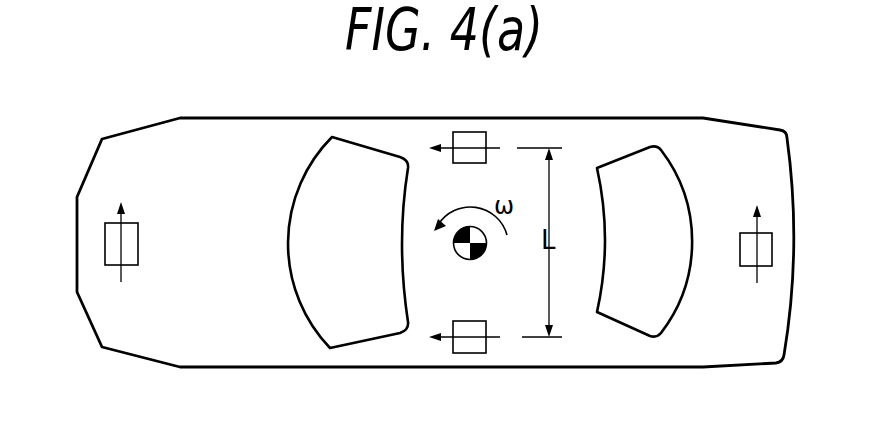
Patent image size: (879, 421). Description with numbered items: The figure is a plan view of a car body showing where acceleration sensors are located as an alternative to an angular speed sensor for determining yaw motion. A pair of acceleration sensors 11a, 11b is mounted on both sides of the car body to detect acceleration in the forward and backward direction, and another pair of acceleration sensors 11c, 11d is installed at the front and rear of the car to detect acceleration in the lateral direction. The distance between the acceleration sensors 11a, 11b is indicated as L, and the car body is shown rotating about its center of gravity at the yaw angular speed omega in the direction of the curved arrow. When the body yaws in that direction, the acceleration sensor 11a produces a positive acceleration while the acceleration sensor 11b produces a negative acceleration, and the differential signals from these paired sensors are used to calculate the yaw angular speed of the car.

The acceleration sensor 11a is at (483, 132).
The acceleration sensor 11b is at (478, 353).
The acceleration sensor 11c is at (105, 237).
The acceleration sensor 11d is at (772, 243).